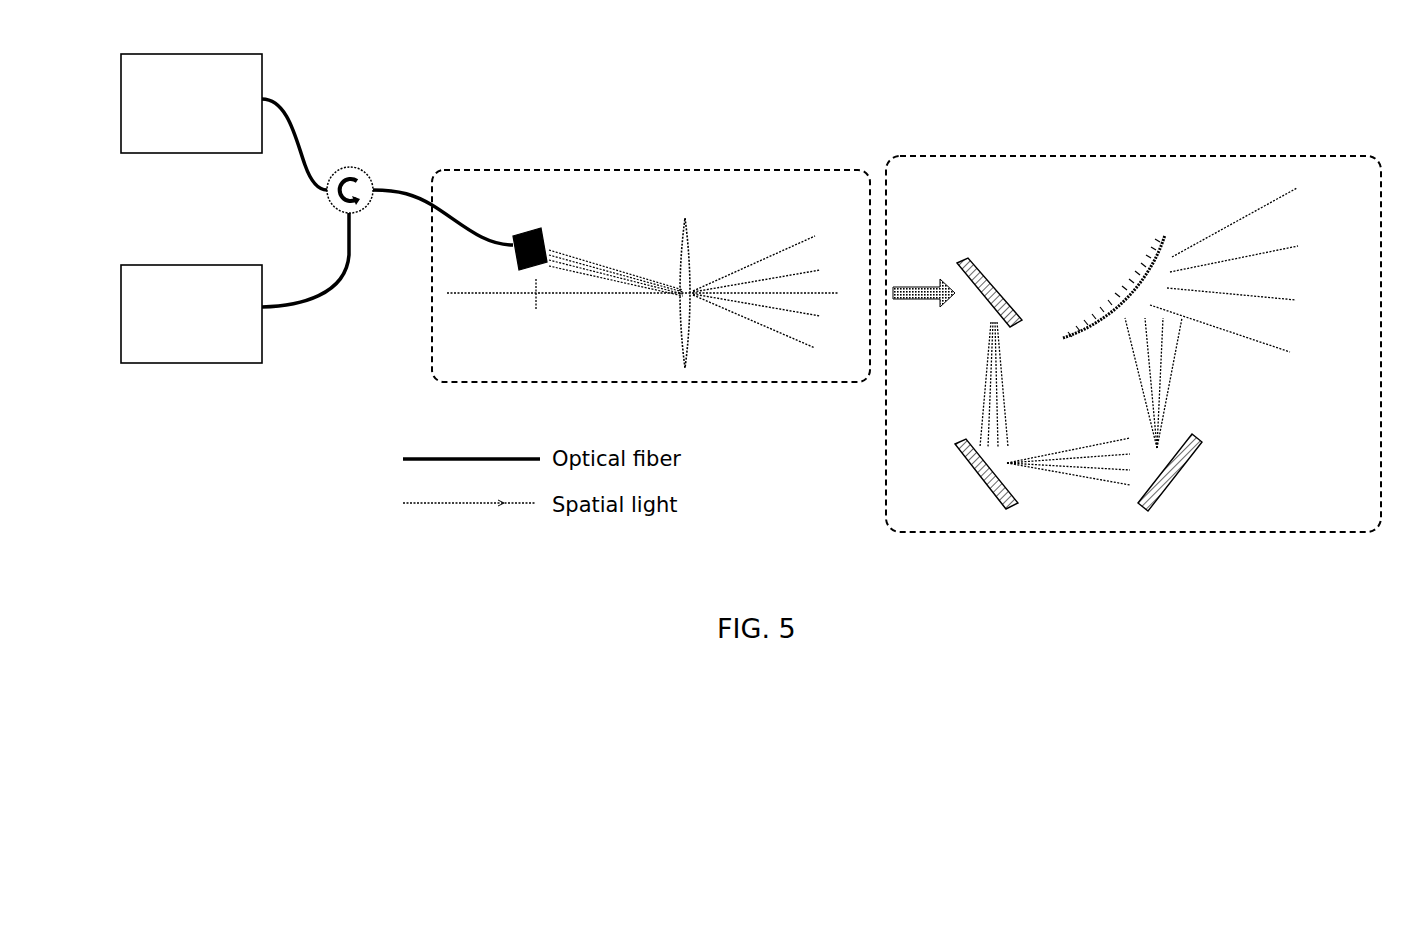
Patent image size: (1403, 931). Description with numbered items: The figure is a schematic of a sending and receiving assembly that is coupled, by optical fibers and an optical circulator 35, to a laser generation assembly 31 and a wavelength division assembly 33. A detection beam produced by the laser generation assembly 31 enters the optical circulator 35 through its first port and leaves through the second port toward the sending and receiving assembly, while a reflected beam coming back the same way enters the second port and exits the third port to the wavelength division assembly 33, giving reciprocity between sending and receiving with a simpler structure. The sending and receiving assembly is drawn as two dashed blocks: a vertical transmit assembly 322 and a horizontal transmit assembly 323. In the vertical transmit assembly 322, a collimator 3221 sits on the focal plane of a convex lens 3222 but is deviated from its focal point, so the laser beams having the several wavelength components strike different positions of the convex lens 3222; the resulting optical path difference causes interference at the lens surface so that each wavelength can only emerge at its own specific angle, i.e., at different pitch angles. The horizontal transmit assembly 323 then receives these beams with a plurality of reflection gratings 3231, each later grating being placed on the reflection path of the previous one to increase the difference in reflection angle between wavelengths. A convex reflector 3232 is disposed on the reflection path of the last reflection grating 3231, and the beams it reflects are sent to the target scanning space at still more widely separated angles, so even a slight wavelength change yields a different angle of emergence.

The laser generation assembly 31 is at (191, 103).
The wavelength division assembly 33 is at (191, 314).
The optical circulator 35 is at (369, 166).
The vertical transmit assembly 322 is at (690, 172).
The collimator 3221 is at (545, 238).
The convex lens 3222 is at (690, 238).
The horizontal transmit assembly 323 is at (1118, 152).
The reflection grating 3231 is at (995, 284).
The convex reflector 3232 is at (1145, 267).